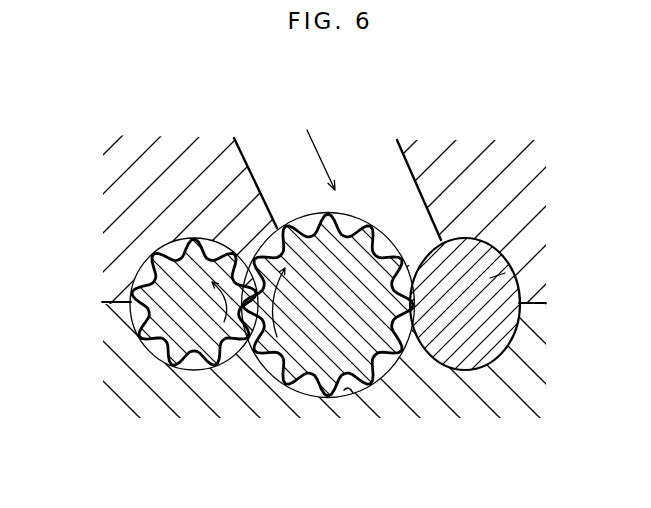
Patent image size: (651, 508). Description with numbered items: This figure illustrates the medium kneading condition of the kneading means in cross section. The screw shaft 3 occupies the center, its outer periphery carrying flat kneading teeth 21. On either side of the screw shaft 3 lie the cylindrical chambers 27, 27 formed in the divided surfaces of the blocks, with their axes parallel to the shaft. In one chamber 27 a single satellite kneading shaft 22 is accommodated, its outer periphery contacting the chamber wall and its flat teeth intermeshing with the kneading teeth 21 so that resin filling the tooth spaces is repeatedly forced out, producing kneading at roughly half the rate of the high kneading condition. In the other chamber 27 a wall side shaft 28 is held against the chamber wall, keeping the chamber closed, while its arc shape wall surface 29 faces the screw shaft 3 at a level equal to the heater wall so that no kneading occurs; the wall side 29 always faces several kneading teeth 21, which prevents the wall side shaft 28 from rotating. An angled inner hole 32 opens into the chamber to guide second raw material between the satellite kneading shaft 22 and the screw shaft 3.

The screw shaft 3 is at (352, 258).
The kneading teeth 21 is at (306, 212).
The satellite kneading shaft 22 is at (162, 281).
The cylindrical chamber 27 is at (154, 342).
The wall side shaft 28 is at (509, 265).
The arc shape wall surface 29 is at (353, 393).
The inner hole 32 is at (401, 149).